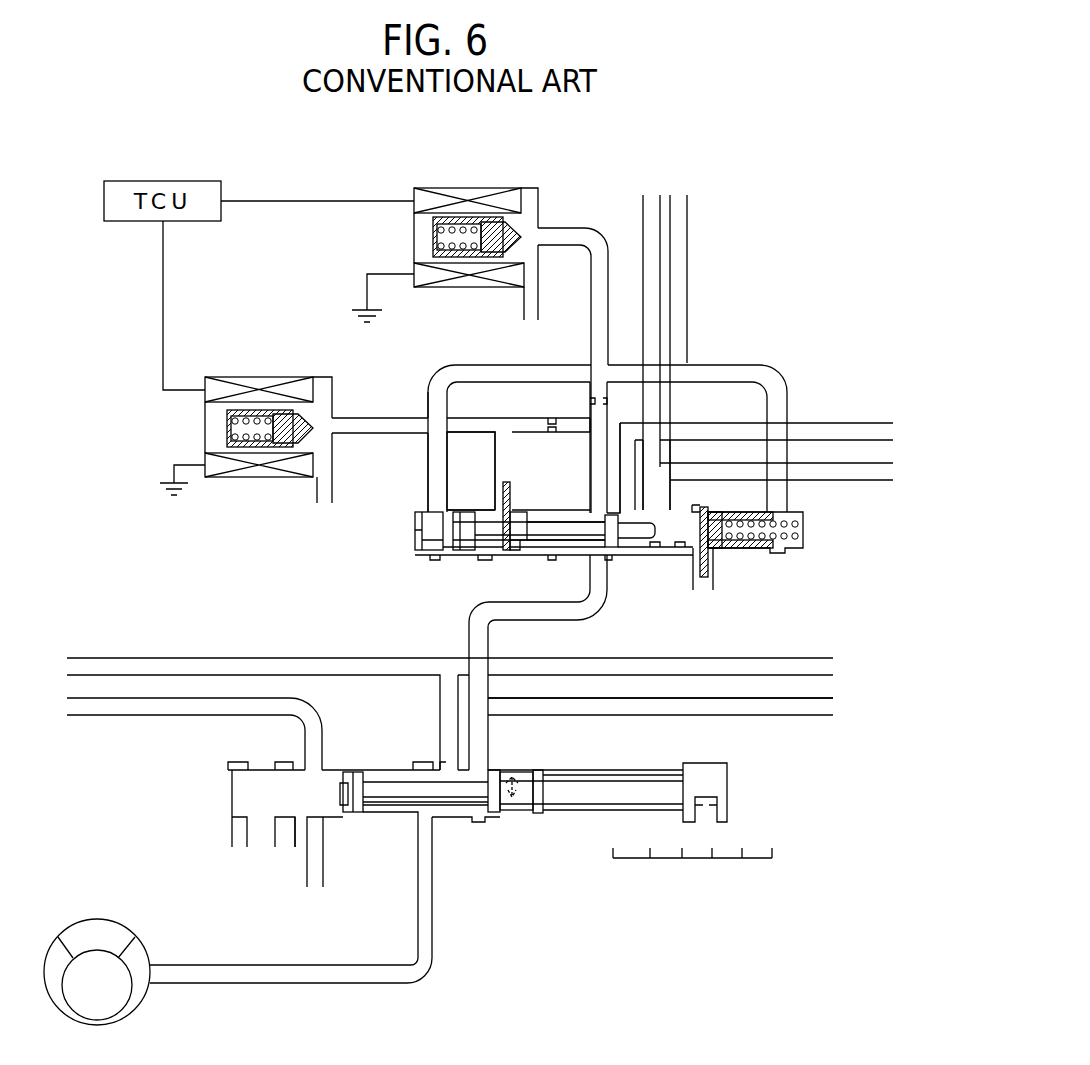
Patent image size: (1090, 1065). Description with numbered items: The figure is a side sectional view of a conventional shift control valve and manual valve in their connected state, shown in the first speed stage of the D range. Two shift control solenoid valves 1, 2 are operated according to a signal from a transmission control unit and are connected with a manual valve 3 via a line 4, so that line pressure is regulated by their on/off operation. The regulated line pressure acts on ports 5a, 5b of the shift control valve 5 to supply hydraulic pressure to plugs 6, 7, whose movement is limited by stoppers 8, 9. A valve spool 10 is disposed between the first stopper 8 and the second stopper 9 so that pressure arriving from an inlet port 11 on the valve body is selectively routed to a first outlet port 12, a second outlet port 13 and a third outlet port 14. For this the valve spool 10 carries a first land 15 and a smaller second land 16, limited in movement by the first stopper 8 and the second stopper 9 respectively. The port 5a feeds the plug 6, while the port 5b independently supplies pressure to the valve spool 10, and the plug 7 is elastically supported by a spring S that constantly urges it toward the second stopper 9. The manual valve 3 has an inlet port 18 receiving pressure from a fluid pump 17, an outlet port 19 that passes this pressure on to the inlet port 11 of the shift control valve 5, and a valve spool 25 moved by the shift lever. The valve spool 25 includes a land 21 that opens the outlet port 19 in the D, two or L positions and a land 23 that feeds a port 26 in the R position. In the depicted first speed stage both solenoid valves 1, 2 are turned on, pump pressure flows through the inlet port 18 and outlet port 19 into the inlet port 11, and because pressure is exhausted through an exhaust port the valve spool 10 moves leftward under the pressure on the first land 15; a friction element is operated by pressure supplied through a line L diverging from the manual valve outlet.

The shift control solenoid valve 1 is at (472, 188).
The shift control solenoid valve 2 is at (263, 377).
The manual valve 3 is at (232, 788).
The line 4 is at (590, 606).
The shift control valve 5 is at (431, 558).
The port 5a is at (428, 490).
The port 5b is at (497, 498).
The plug 6 is at (415, 538).
The plug 7 is at (750, 549).
The first stopper 8 is at (510, 504).
The second stopper 9 is at (700, 572).
The valve spool 10 is at (555, 524).
The inlet port 11 is at (598, 548).
The first outlet port 12 is at (627, 500).
The second outlet port 13 is at (655, 503).
The third outlet port 14 is at (677, 503).
The first land 15 is at (522, 541).
The second land 16 is at (612, 542).
The fluid pump 17 is at (90, 918).
The inlet port 18 is at (425, 822).
The outlet port 19 is at (477, 773).
The land 21 is at (494, 812).
The land 23 is at (358, 812).
The valve spool 25 is at (393, 767).
The port 26 is at (315, 770).
The spring S is at (783, 535).
The line L is at (797, 707).